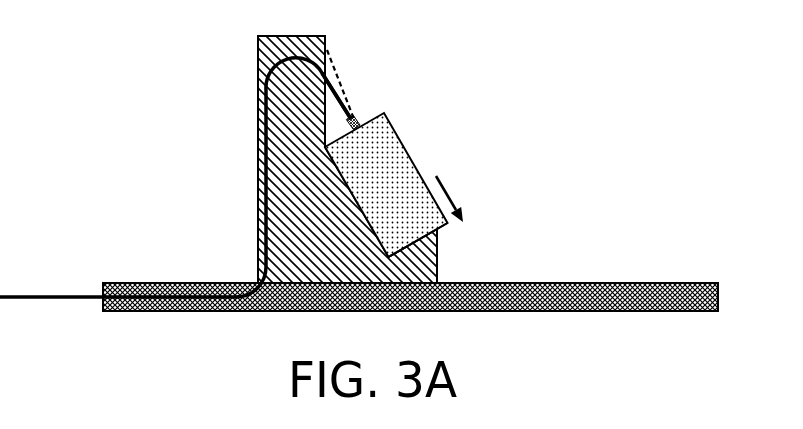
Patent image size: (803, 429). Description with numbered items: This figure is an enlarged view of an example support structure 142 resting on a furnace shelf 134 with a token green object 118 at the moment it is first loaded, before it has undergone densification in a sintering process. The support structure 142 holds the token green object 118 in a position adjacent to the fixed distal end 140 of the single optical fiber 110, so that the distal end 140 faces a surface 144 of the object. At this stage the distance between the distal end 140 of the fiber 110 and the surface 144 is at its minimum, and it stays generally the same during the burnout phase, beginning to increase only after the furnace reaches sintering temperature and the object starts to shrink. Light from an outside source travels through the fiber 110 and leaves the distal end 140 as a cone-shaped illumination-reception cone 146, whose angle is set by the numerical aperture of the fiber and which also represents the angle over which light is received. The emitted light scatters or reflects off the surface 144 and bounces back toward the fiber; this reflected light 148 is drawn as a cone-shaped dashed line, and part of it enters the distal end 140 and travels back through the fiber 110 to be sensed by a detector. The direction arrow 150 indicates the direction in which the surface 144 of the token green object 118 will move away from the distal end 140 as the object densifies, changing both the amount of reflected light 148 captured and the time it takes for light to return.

The single optical fiber 110 is at (266, 113).
The token green object 118 is at (443, 226).
The furnace shelf 134 is at (616, 283).
The distal end of the fiber 140 is at (357, 83).
The support structure 142 is at (293, 36).
The surface of the token green object 144 is at (380, 126).
The illumination-reception cone 146 is at (358, 122).
The reflected light 148 is at (333, 62).
The direction arrow 150 is at (449, 194).